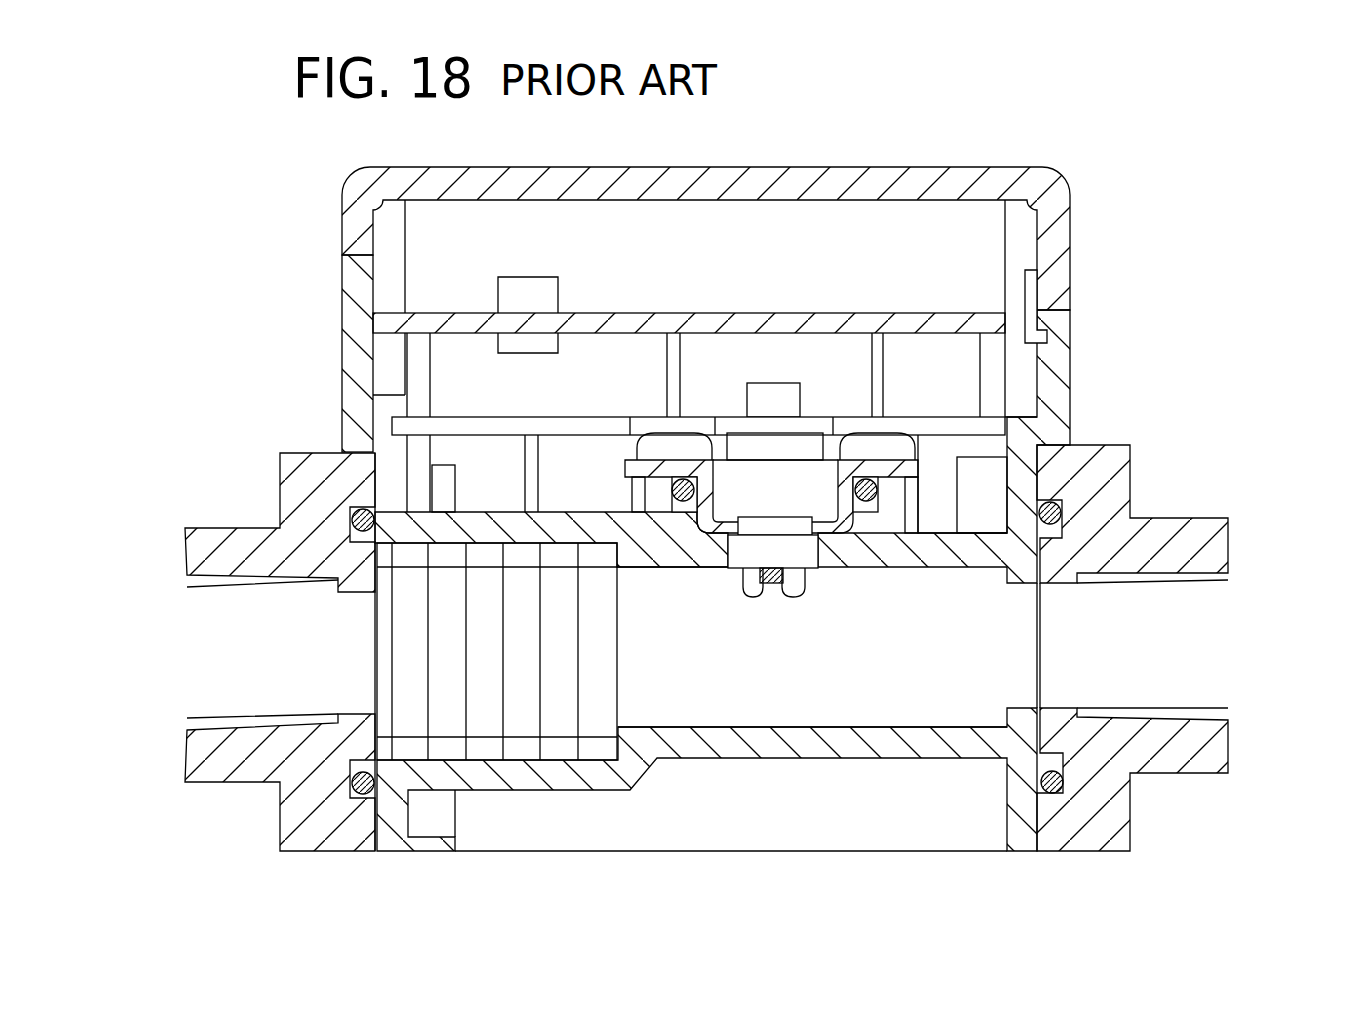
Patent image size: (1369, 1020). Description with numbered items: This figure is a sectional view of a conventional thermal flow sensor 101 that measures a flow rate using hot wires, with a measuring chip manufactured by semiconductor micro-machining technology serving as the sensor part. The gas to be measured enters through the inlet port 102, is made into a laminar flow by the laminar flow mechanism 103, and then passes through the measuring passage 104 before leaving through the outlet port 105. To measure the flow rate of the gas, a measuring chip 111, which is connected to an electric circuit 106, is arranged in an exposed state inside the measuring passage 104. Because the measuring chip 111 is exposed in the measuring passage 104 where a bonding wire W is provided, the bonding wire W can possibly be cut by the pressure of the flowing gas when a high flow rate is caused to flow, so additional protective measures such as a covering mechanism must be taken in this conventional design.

The thermal flow sensor 101 is at (1063, 130).
The inlet port 102 is at (208, 682).
The laminar flow mechanism 103 is at (543, 712).
The measuring passage 104 is at (853, 703).
The outlet port 105 is at (1203, 672).
The electric circuit 106 is at (917, 318).
The measuring chip 111 is at (768, 587).
The bonding wire W is at (745, 588).